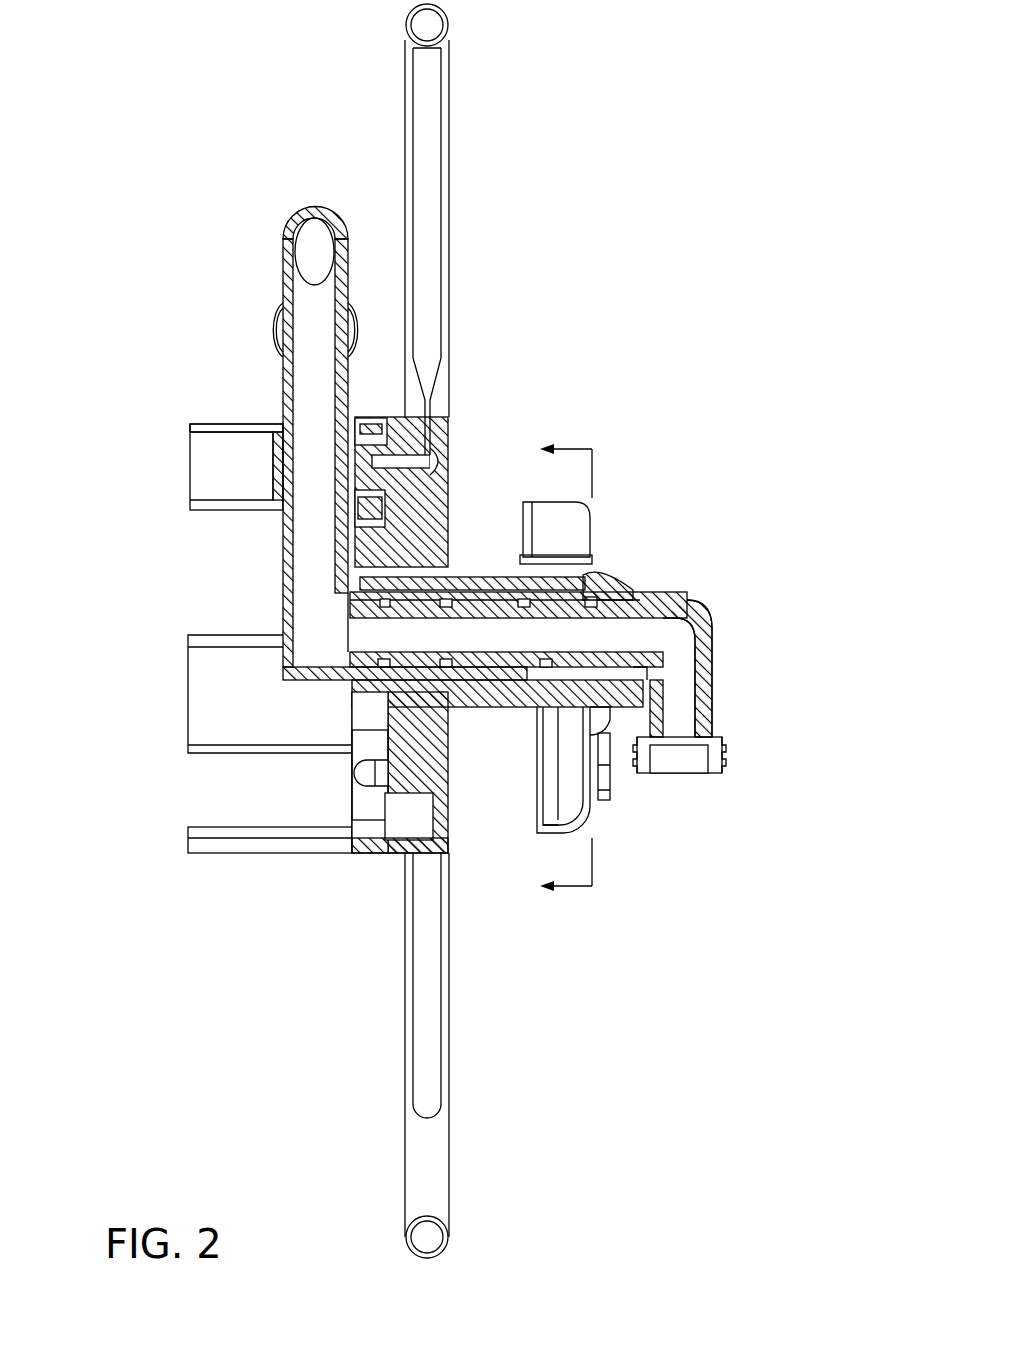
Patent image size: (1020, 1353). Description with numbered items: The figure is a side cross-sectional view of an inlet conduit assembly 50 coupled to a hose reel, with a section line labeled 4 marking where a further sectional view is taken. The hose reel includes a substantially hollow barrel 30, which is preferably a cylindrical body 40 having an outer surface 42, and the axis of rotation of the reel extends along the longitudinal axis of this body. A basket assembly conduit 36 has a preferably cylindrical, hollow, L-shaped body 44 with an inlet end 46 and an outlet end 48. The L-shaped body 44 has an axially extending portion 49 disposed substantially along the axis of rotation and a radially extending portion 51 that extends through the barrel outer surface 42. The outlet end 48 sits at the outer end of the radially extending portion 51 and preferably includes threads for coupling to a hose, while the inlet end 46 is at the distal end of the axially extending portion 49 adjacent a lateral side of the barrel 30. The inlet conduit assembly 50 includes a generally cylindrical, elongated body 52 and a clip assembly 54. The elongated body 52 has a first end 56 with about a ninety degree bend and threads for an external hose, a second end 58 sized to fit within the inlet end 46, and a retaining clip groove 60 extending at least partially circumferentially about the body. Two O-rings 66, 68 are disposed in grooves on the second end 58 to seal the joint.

The section line 4- 4 is at (555, 667).
The barrel 30 is at (240, 427).
The basket assembly conduit 36 is at (282, 282).
The cylindrical body 40 is at (205, 482).
The outer surface 42 is at (208, 425).
The L-shaped body 44 is at (348, 390).
The inlet end 46 is at (420, 560).
The outlet end 48 is at (273, 335).
The axially extending portion 49 is at (312, 680).
The inlet conduit assembly 50 is at (618, 440).
The radially extending portion 51 is at (282, 562).
The elongated body 52 is at (633, 598).
The clip assembly 54 is at (620, 847).
The first end 56 is at (713, 690).
The second end 58 is at (362, 660).
The retaining clip groove 60 is at (572, 585).
The O-ring 66 is at (350, 598).
The O-ring 68 is at (420, 655).